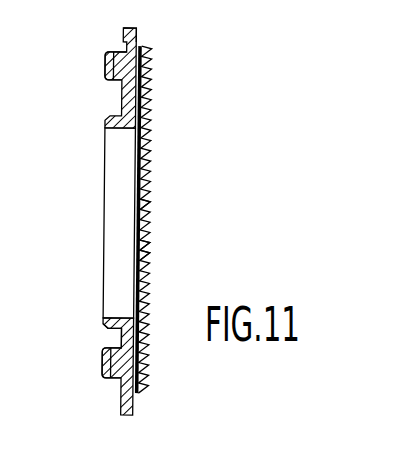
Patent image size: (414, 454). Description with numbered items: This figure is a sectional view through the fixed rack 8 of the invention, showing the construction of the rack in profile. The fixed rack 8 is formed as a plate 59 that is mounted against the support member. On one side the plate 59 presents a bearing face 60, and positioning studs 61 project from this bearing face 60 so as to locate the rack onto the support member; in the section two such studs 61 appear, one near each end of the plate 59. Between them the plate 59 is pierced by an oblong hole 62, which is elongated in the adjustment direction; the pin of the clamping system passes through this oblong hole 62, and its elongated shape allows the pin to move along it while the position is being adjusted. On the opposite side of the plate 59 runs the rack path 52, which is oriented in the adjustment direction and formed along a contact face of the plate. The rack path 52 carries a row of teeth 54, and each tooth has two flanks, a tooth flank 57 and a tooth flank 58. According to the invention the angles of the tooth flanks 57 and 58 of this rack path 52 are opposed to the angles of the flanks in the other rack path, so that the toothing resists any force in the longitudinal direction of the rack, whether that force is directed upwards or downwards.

The fixed rack 8 is at (171, 112).
The rack path 52 is at (152, 158).
The teeth 54 is at (150, 205).
The tooth flank 57 is at (150, 243).
The tooth flank 58 is at (152, 256).
The plate 59 is at (138, 29).
The bearing face 60 is at (116, 343).
The positioning studs 61 is at (112, 63).
The oblong hole 62 is at (118, 202).